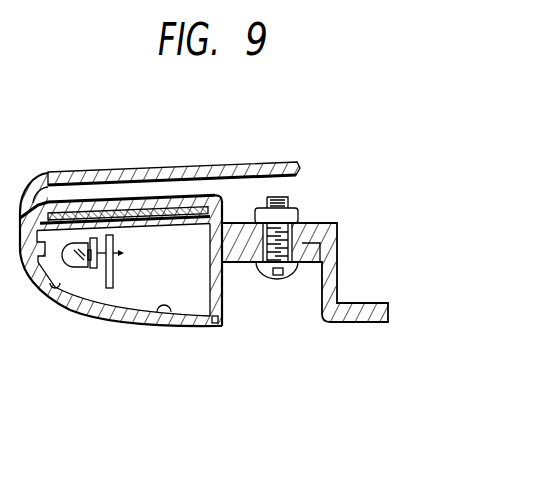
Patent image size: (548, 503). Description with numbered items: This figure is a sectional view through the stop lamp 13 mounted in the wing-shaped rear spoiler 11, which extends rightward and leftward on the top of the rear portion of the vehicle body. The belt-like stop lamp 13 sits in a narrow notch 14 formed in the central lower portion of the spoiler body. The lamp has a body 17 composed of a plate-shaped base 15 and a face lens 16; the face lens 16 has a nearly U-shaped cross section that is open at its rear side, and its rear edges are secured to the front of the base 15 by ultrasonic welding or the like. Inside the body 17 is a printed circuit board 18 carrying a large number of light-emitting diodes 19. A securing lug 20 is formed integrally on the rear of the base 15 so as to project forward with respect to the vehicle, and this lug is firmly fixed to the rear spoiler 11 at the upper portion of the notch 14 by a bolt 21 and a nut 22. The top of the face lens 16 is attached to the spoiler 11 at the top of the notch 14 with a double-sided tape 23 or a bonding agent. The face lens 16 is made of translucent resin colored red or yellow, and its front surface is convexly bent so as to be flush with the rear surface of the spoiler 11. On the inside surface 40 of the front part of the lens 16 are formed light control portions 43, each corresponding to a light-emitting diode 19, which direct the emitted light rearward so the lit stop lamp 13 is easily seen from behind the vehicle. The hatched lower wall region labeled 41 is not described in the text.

The rear spoiler 11 is at (232, 157).
The stop lamp 13 is at (97, 386).
The notch 14 is at (326, 320).
The base 15 is at (235, 320).
The face lens 16 is at (200, 334).
The body 17 is at (267, 399).
The printed circuit board 18 is at (109, 290).
The light-emitting diode 19 is at (72, 269).
The securing lug 20 is at (320, 243).
The bolt 21 is at (273, 280).
The nut 22 is at (297, 207).
The double-sided tape 23 is at (150, 209).
The inside surface 40 is at (55, 299).
The bottom wall 41 is at (166, 318).
The light control portion 43 is at (49, 244).